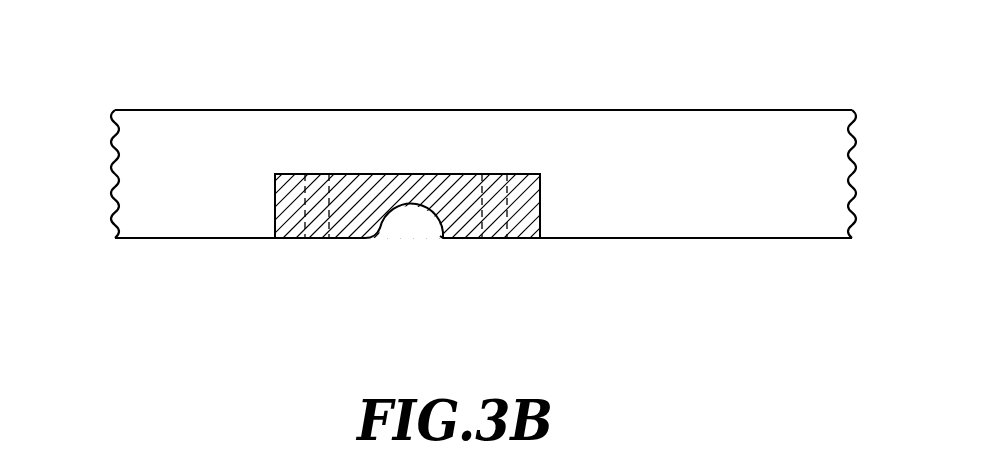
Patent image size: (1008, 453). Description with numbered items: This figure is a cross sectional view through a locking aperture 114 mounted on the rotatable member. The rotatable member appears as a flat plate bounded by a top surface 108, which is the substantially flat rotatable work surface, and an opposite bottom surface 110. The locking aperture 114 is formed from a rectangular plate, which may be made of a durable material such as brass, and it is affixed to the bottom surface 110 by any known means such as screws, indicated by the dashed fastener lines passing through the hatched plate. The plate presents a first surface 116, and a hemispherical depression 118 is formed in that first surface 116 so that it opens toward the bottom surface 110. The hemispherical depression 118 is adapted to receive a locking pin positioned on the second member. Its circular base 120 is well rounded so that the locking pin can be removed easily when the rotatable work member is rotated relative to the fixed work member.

The top surface 108 is at (583, 109).
The bottom surface 110 is at (657, 238).
The locking aperture 114 is at (273, 288).
The first surface 116 is at (292, 245).
The hemispherical depression 118 is at (393, 216).
The circular base 120 is at (443, 243).